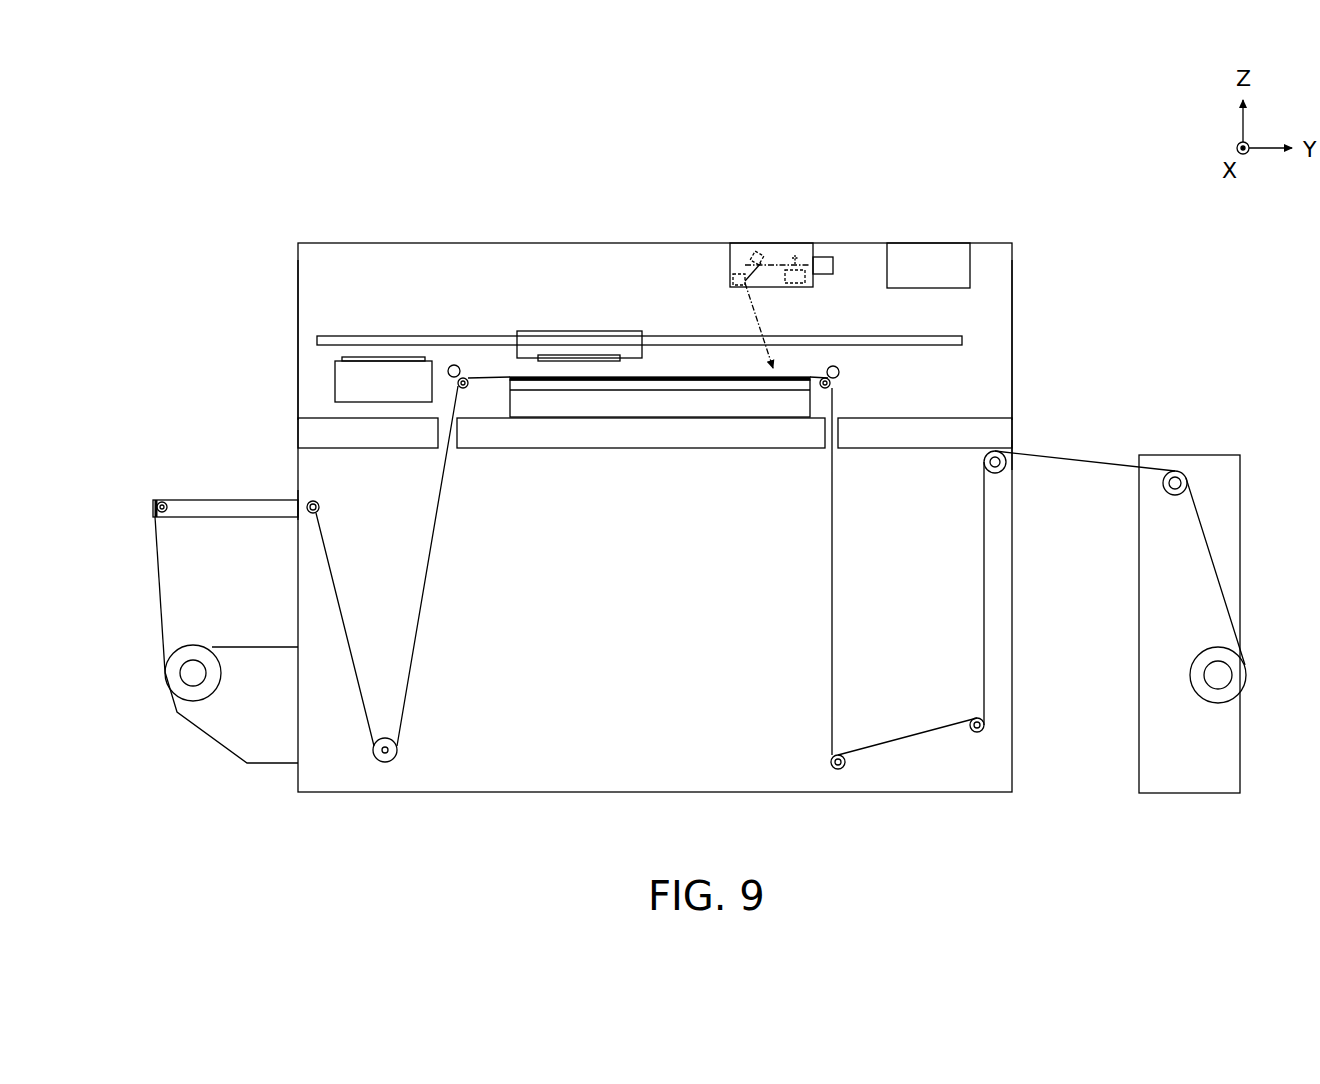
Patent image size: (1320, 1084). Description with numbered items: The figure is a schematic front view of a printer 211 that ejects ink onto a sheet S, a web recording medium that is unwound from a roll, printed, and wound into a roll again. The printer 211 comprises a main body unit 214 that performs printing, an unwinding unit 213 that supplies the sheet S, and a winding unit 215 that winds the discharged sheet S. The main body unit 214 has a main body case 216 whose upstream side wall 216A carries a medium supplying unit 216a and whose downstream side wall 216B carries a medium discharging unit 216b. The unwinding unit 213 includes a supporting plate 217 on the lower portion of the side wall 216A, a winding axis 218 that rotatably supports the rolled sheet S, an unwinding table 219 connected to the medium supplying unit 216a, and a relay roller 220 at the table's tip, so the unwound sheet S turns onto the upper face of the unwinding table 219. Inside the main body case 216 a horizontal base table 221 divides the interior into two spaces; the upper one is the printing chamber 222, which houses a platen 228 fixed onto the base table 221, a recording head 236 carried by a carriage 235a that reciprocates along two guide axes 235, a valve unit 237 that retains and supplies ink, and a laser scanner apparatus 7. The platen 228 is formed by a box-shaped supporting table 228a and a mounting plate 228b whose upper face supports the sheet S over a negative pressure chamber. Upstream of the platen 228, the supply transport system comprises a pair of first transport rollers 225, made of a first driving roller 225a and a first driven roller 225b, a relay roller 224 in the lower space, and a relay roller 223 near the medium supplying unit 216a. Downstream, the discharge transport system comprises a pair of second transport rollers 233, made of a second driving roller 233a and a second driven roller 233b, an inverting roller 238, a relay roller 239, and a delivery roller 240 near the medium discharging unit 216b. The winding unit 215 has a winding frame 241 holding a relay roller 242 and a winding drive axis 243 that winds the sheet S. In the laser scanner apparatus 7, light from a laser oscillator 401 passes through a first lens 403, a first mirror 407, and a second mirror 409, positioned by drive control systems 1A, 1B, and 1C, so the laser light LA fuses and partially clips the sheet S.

The printer 211 is at (1065, 190).
The unwinding unit 213 is at (194, 579).
The main body unit 214 is at (635, 212).
The winding unit 215 is at (1171, 560).
The main body case 216 is at (552, 243).
The side wall 216A is at (298, 288).
The side wall 216B is at (1012, 310).
The medium supplying unit 216a is at (290, 494).
The medium discharging unit 216b is at (1016, 444).
The supporting plate 217 is at (212, 735).
The winding axis 218 is at (183, 675).
The unwinding table 219 is at (225, 510).
The relay roller 220 is at (158, 500).
The base table 221 is at (672, 430).
The printing chamber 222 is at (345, 283).
The relay roller 223 is at (320, 507).
The relay roller 224 is at (398, 750).
The pair of first transport rollers 225 is at (453, 265).
The first driving roller 225a is at (466, 377).
The first driven roller 225b is at (451, 365).
The platen 228 is at (653, 462).
The supporting table 228a is at (530, 385).
The mounting plate 228b is at (597, 405).
The pair of second transport rollers 233 is at (903, 386).
The second driving roller 233a is at (830, 387).
The second driven roller 233b is at (840, 372).
The guide axes 235 is at (675, 335).
The carriage 235a is at (528, 332).
The recording head 236 is at (603, 361).
The valve unit 237 is at (947, 259).
The inverting roller 238 is at (838, 770).
The relay roller 239 is at (978, 733).
The delivery roller 240 is at (1006, 462).
The winding frame 241 is at (1232, 455).
The relay roller 242 is at (1163, 483).
The winding drive axis 243 is at (1192, 677).
The laser oscillator 401 is at (826, 258).
The first lens 403 is at (806, 276).
The first mirror 407 is at (768, 290).
The second mirror 409 is at (745, 285).
The drive control system 1A is at (786, 270).
The drive control system 1B is at (757, 258).
The drive control system 1C is at (733, 276).
The laser scanner apparatus 7 is at (786, 240).
The laser light LA is at (766, 320).
The sheet S is at (157, 570).